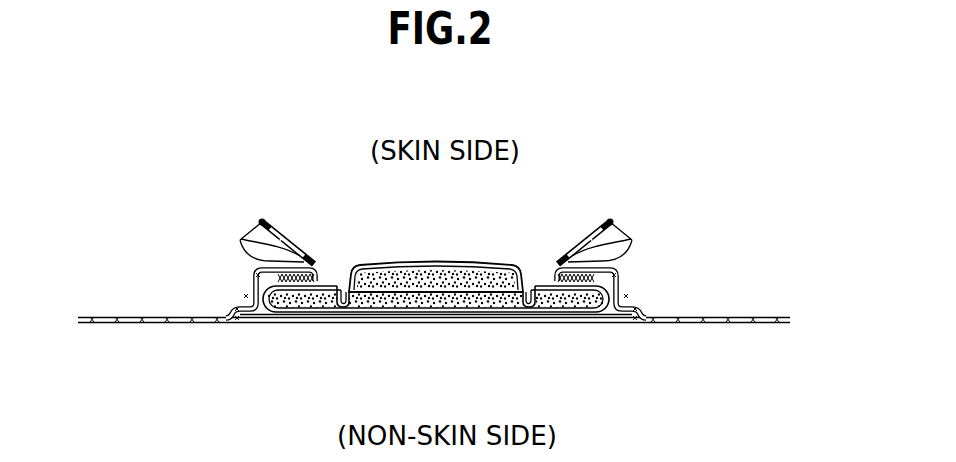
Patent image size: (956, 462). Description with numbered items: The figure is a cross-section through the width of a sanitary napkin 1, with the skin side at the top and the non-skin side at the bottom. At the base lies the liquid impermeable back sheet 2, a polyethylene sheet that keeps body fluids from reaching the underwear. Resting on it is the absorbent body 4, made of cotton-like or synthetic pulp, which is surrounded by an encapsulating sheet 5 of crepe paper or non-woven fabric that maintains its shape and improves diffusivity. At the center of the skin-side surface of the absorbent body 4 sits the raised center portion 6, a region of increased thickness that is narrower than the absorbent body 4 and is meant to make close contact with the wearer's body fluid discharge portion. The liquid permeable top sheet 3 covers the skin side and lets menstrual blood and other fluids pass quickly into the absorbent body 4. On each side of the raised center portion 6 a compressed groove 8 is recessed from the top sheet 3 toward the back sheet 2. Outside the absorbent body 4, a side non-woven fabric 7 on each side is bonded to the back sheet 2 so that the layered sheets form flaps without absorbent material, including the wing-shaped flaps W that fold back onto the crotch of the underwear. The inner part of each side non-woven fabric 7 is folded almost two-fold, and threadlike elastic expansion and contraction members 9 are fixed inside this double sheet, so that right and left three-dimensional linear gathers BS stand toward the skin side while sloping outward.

The sanitary napkin 1 is at (666, 186).
The liquid impermeable back sheet 2 is at (512, 322).
The liquid permeable top sheet 3 is at (492, 263).
The absorbent body 4 is at (420, 311).
The encapsulating sheet 5 is at (380, 264).
The raised center portion 6 is at (417, 272).
The side non-woven fabric 7 is at (246, 289).
The compressed grooves 8 is at (342, 282).
The threadlike elastic expansion and contraction members 9 is at (435, 242).
The three-dimensional linear gathers BS is at (270, 201).
The wing-shaped flaps W is at (112, 312).